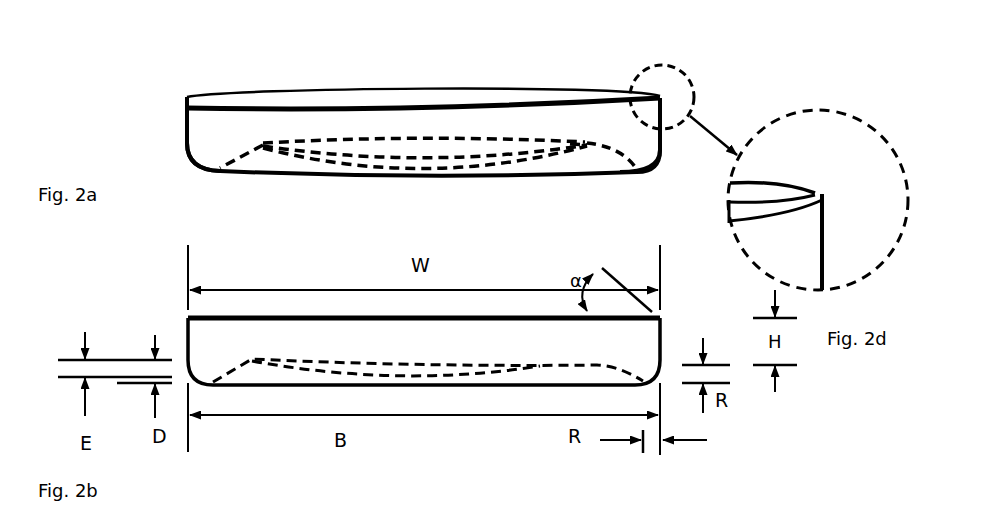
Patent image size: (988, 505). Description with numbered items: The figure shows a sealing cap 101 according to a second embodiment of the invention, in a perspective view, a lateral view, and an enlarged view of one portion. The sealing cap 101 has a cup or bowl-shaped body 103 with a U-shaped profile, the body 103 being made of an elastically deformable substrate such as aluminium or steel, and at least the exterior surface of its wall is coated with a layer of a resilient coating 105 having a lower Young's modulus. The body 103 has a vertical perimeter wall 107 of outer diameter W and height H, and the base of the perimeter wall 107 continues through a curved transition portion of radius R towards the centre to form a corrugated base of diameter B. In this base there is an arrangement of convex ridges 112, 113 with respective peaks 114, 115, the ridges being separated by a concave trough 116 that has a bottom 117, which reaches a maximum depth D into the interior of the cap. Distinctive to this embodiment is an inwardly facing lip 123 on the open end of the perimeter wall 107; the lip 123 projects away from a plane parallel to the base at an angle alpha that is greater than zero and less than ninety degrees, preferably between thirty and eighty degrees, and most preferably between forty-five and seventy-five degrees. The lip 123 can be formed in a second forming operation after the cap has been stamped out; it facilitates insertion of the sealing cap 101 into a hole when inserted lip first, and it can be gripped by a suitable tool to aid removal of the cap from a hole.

In FIG. 2A, the sealing cap 101 is at (360, 134).
In FIG. 2B, the sealing cap 101 is at (134, 309).
In FIG. 2A, the body 103 is at (427, 84).
In FIG. 2A, the resilient coating 105 is at (185, 119).
In FIG. 2A, the perimeter wall 107 is at (178, 143).
In FIG. 2A, the convex ridge 112 is at (613, 164).
In FIG. 2A, the convex ridge 113 is at (364, 176).
In FIG. 2A, the peak 114 is at (635, 172).
In FIG. 2A, the peak 115 is at (409, 173).
In FIG. 2A, the concave trough 116 is at (586, 156).
In FIG. 2A, the bottom 117 is at (586, 142).
In FIG. 2D, the lip 123 is at (817, 192).
In FIG. 2B, the lip 123 is at (603, 500).